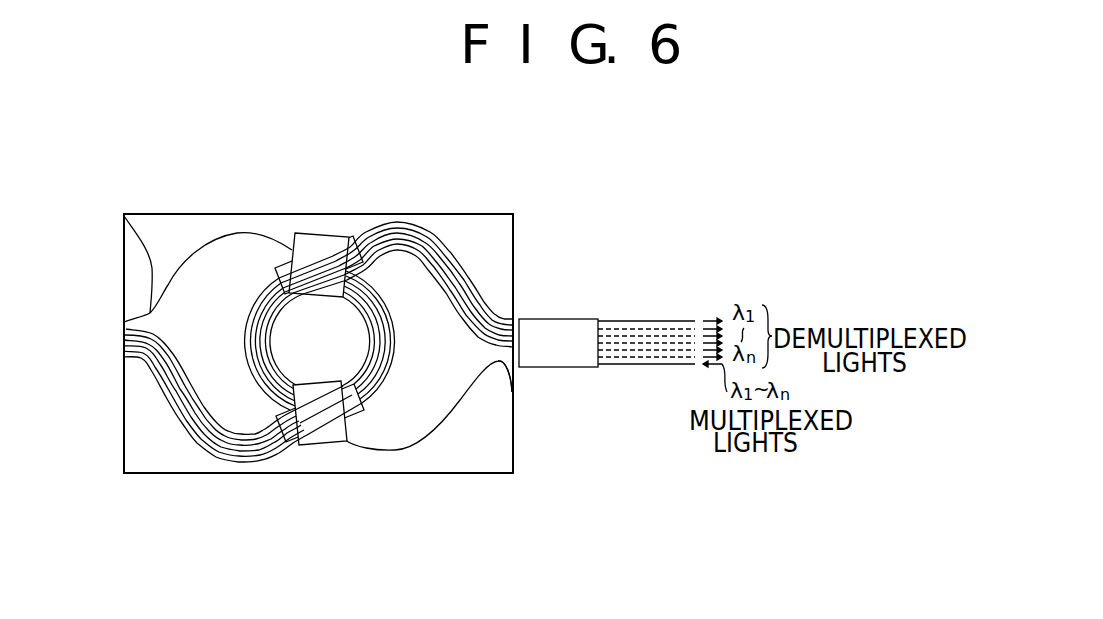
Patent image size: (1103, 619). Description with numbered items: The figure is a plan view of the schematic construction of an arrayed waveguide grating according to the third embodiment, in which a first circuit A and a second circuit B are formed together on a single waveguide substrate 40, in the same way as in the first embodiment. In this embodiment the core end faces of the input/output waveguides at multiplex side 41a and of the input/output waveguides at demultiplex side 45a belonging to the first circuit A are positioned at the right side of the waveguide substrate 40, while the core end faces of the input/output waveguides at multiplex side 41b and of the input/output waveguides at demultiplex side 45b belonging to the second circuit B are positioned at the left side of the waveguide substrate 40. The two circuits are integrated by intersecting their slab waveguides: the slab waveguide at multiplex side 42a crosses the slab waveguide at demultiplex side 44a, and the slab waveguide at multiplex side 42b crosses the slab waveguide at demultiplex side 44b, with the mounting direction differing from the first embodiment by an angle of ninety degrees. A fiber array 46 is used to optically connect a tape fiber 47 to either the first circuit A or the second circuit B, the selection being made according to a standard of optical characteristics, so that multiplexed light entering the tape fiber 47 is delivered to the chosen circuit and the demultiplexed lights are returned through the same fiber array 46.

The waveguide substrate 40 is at (455, 228).
The input/output waveguides at multiplex side 41a is at (513, 397).
The input/output waveguides at multiplex side 41b is at (124, 212).
The slab waveguide at multiplex side 42a is at (340, 442).
The slab waveguide at multiplex side 42b is at (295, 233).
The slab waveguide at demultiplex side 44a is at (340, 234).
The slab waveguide at demultiplex side 44b is at (295, 443).
The input/output waveguides at demultiplex side 45a is at (505, 350).
The input/output waveguides at demultiplex side 45b is at (132, 362).
The fiber array 46 is at (590, 366).
The tape fiber 47 is at (662, 318).
The first circuit A is at (417, 449).
The second circuit B is at (223, 232).